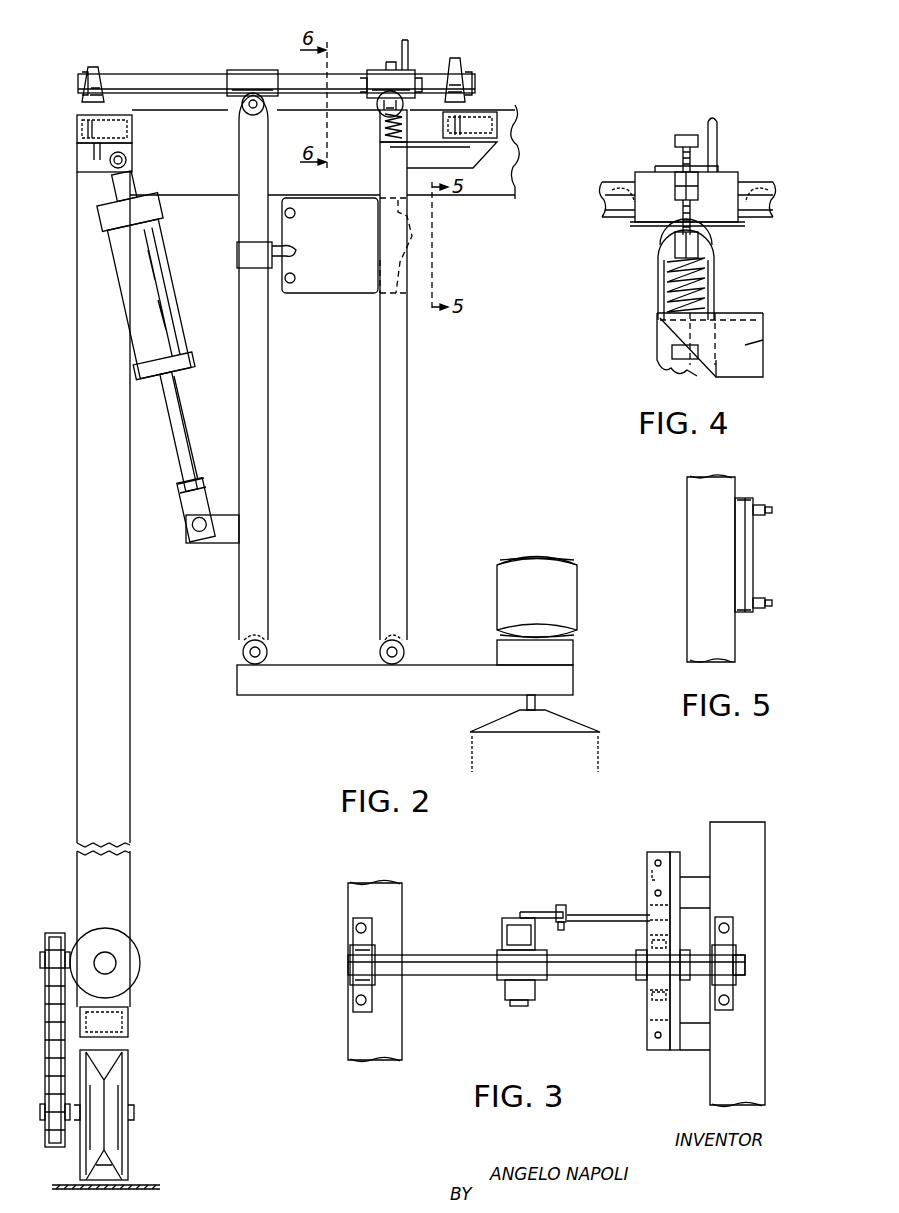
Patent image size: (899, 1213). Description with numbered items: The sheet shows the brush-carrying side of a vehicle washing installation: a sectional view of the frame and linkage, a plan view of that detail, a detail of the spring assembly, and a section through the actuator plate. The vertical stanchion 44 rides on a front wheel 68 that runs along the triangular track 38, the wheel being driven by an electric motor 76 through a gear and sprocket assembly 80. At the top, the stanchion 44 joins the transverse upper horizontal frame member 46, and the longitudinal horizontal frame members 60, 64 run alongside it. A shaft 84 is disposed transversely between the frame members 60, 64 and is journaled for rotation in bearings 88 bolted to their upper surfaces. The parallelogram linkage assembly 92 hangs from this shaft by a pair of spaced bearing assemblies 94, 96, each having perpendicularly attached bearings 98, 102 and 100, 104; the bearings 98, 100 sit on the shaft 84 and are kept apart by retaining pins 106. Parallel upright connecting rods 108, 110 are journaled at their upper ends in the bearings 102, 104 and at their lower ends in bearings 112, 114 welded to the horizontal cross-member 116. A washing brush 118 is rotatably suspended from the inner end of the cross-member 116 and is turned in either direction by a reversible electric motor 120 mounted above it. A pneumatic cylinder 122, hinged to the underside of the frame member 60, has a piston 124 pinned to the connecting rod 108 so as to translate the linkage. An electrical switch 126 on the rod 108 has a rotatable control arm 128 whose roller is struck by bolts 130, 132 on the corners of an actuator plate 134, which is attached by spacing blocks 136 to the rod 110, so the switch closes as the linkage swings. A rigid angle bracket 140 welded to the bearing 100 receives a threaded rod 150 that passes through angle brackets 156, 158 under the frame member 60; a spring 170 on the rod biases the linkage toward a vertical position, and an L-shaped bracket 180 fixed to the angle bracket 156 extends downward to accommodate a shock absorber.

In FIG. 2, the triangular track 38 is at (118, 1163).
In FIG. 2, the vertical stanchion 44 is at (88, 270).
In FIG. 2, the transverse upper horizontal frame member 46 is at (322, 152).
In FIG. 2, the longitudinal horizontal frame member 60 is at (87, 133).
In FIG. 3, the longitudinal horizontal frame member 60 is at (401, 918).
In FIG. 2, the longitudinal horizontal frame member 64 is at (507, 114).
In FIG. 3, the longitudinal horizontal frame member 64 is at (737, 964).
In FIG. 2, the front wheel 68 is at (128, 1080).
In FIG. 2, the electric motor 76 is at (139, 962).
In FIG. 2, the gear and sprocket assembly 80 is at (50, 1034).
In FIG. 2, the shaft 84 is at (168, 72).
In FIG. 4, the shaft 84 is at (771, 216).
In FIG. 3, the shaft 84 is at (460, 956).
In FIG. 2, the bearing 88 is at (94, 57).
In FIG. 3, the bearing 88 is at (352, 940).
In FIG. 2, the parallelogram linkage assembly 92 is at (416, 425).
In FIG. 2, the bearing assembly 94 is at (259, 80).
In FIG. 2, the bearing assembly 96 is at (373, 80).
In FIG. 2, the bearing 98 is at (230, 68).
In FIG. 3, the bearing 98 is at (498, 979).
In FIG. 2, the bearing 100 is at (410, 58).
In FIG. 4, the bearing 100 is at (644, 168).
In FIG. 2, the bearing 102 is at (271, 110).
In FIG. 3, the bearing 102 is at (532, 990).
In FIG. 2, the bearing 104 is at (376, 110).
In FIG. 4, the bearing 104 is at (718, 238).
In FIG. 2, the retaining pin 106 is at (362, 60).
In FIG. 4, the retaining pin 106 is at (614, 184).
In FIG. 2, the upright connecting rod 108 is at (268, 350).
In FIG. 2, the upright connecting rod 110 is at (407, 348).
In FIG. 4, the upright connecting rod 110 is at (655, 342).
In FIG. 5, the upright connecting rod 110 is at (690, 556).
In FIG. 2, the bearing 112 is at (244, 650).
In FIG. 2, the bearing 114 is at (408, 662).
In FIG. 2, the horizontal cross-member 116 is at (332, 666).
In FIG. 2, the washing brush 118 is at (470, 736).
In FIG. 2, the reversible electric motor 120 is at (537, 611).
In FIG. 2, the pneumatic cylinder 122 is at (133, 308).
In FIG. 2, the piston 124 is at (186, 482).
In FIG. 2, the electrical switch 126 is at (237, 258).
In FIG. 3, the electrical switch 126 is at (504, 918).
In FIG. 2, the rotatable control arm 128 is at (297, 254).
In FIG. 3, the rotatable control arm 128 is at (548, 908).
In FIG. 2, the bolt 130 is at (292, 208).
In FIG. 5, the bolt 130 is at (765, 510).
In FIG. 2, the bolt 132 is at (296, 278).
In FIG. 5, the bolt 132 is at (766, 602).
In FIG. 2, the actuator plate 134 is at (330, 245).
In FIG. 5, the actuator plate 134 is at (754, 564).
In FIG. 3, the actuator plate 134 is at (628, 916).
In FIG. 2, the spacing block 136 is at (410, 238).
In FIG. 5, the spacing block 136 is at (745, 498).
In FIG. 4, the rigid angle bracket 140 is at (718, 134).
In FIG. 3, the rigid angle bracket 140 is at (647, 1015).
In FIG. 4, the threaded rod 150 is at (677, 148).
In FIG. 3, the angle bracket 156 is at (696, 874).
In FIG. 4, the angle bracket 158 is at (762, 344).
In FIG. 3, the angle bracket 158 is at (692, 1050).
In FIG. 4, the spring 170 is at (712, 280).
In FIG. 3, the L-shaped bracket 180 is at (663, 854).